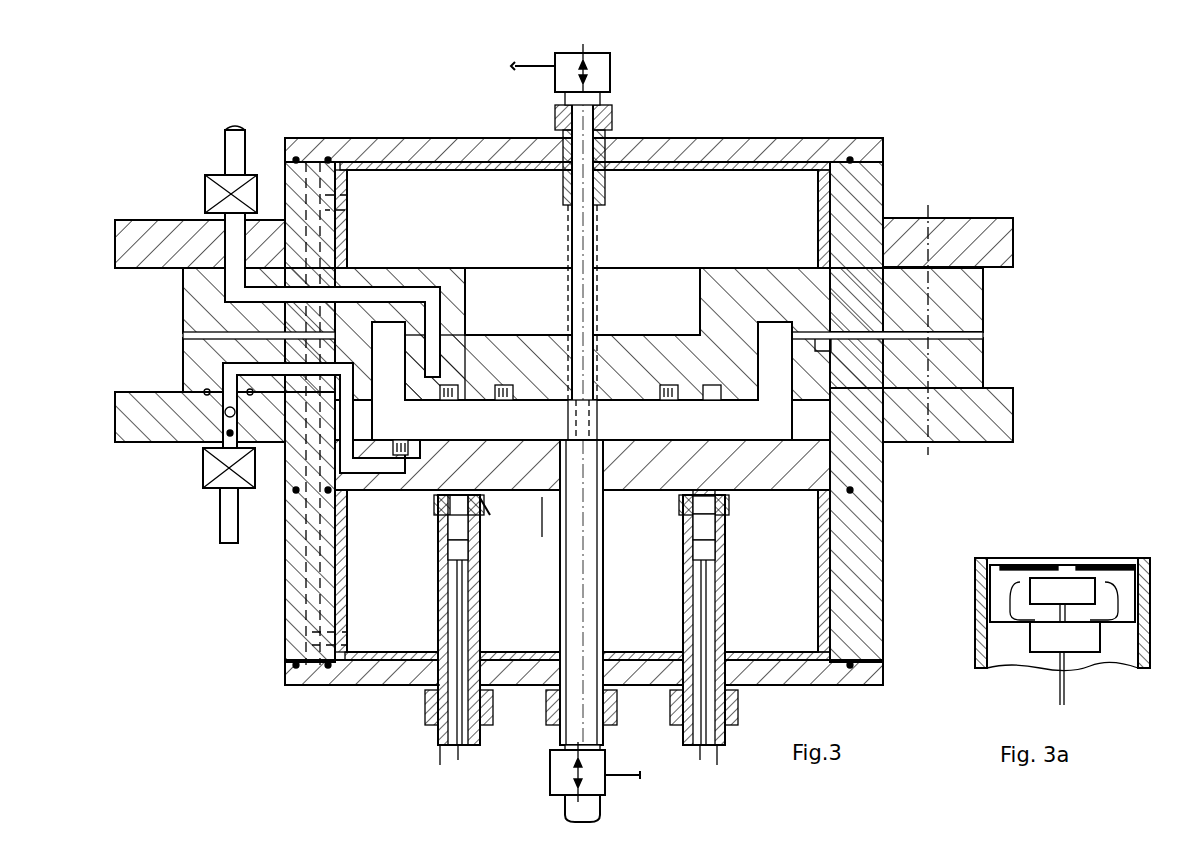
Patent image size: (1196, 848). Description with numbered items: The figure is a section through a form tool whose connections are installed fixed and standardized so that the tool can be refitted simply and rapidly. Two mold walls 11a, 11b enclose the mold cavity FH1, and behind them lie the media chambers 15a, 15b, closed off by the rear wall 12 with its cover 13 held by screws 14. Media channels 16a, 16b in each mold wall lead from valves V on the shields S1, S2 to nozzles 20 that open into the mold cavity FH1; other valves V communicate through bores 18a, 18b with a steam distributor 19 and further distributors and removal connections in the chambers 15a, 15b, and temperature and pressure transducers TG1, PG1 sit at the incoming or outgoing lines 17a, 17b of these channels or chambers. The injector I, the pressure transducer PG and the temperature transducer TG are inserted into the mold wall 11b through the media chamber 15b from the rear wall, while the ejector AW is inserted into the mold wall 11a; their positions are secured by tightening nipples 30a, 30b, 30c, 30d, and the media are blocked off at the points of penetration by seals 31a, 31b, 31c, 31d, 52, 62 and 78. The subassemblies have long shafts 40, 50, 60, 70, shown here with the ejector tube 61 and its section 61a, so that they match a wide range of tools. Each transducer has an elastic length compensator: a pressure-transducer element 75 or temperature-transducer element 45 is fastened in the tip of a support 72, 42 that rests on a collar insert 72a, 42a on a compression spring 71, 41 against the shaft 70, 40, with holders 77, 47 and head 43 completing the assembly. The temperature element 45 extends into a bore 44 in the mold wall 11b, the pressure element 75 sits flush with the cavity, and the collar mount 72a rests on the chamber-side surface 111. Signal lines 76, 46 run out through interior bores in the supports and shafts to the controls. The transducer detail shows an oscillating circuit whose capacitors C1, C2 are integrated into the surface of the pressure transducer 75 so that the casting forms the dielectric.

In FIG. 3, the mold wall 11a is at (725, 292).
In FIG. 3, the mold wall 11b is at (803, 458).
In FIG. 3, the rear wall 12 is at (745, 150).
In FIG. 3, the top cover 13 is at (690, 163).
In FIG. 3, the cover fastening screw 14 is at (850, 158).
In FIG. 3, the media chamber 15a is at (480, 182).
In FIG. 3, the media chamber 15b is at (808, 572).
In FIG. 3, the media channel 16a is at (422, 292).
In FIG. 3, the media channel 16b is at (312, 535).
In FIG. 3, the incoming or outgoing line 17a is at (232, 236).
In FIG. 3, the incoming or outgoing line 17b is at (223, 396).
In FIG. 3, the bore 18a is at (315, 158).
In FIG. 3, the bore 18b is at (292, 590).
In FIG. 3, the steam distributor 19 is at (400, 212).
In FIG. 3, the nozzle 20 is at (455, 385).
In FIG. 3, the tightening nipple 30a is at (423, 697).
In FIG. 3, the tightening nipple 30b is at (546, 697).
In FIG. 3, the tightening nipple 30c is at (680, 690).
In FIG. 3, the tightening nipple 30d is at (612, 122).
In FIG. 3, the seal 31a is at (430, 676).
In FIG. 3, the seal 31b is at (614, 682).
In FIG. 3, the seal 31c is at (743, 687).
In FIG. 3, the seal 31d is at (568, 170).
In FIG. 3, the shaft 40 is at (726, 590).
In FIG. 3, the compression spring 41 is at (728, 518).
In FIG. 3, the support 42 is at (694, 495).
In FIG. 3, the collar insert 42a is at (690, 508).
In FIG. 3, the sensor head 43 is at (690, 533).
In FIG. 3, the bore 44 is at (695, 485).
In FIG. 3, the temperature-transducer element 45 is at (771, 376).
In FIG. 3, the signal line 46 is at (707, 642).
In FIG. 3, the sensor holder 47 is at (715, 542).
In FIG. 3, the shaft 50 is at (560, 590).
In FIG. 3, the seal 52 is at (605, 470).
In FIG. 3, the shaft 60 is at (606, 185).
In FIG. 3, the inlet tube 61 is at (598, 240).
In FIG. 3, the tube section 61a is at (568, 420).
In FIG. 3, the seal 62 is at (600, 340).
In FIG. 3, the shaft 70 is at (438, 576).
In FIG. 3, the compression spring 71 is at (436, 505).
In FIG. 3, the support 72 is at (440, 528).
In FIG. 3a, the support 72 is at (990, 640).
In FIG. 3, the collar insert 72a is at (482, 500).
In FIG. 3, the pressure-transducer element 75 is at (450, 407).
In FIG. 3a, the pressure-transducer element 75 is at (1005, 590).
In FIG. 3, the signal line 76 is at (463, 636).
In FIG. 3a, the signal line 76 is at (1066, 690).
In FIG. 3, the sensor holder 77 is at (468, 545).
In FIG. 3, the seal 78 is at (425, 445).
In FIG. 3, the chamber-side surface 111 is at (540, 529).
In FIG. 3, the ejector AW is at (612, 66).
In FIG. 3, the injector I is at (550, 773).
In FIG. 3, the pressure transducer PG is at (443, 772).
In FIG. 3, the temperature transducer TG is at (716, 772).
In FIG. 3, the pressure transducer PG1 is at (228, 414).
In FIG. 3, the temperature transducer TG1 is at (228, 436).
In FIG. 3, the valve V is at (205, 193).
In FIG. 3, the shield S1 is at (152, 433).
In FIG. 3, the shield S2 is at (152, 245).
In FIG. 3, the mold cavity FH1 is at (582, 381).
In FIG. 3a, the capacitor C1 is at (1010, 562).
In FIG. 3a, the capacitor C2 is at (1090, 562).